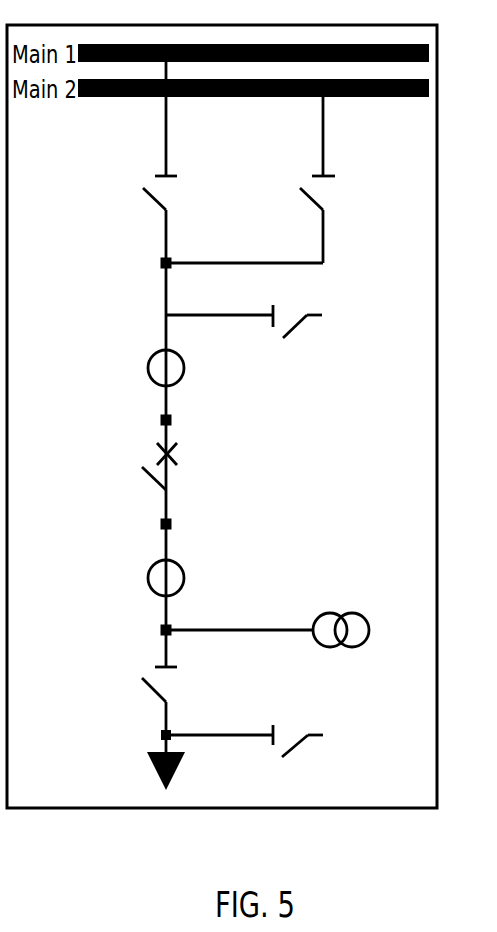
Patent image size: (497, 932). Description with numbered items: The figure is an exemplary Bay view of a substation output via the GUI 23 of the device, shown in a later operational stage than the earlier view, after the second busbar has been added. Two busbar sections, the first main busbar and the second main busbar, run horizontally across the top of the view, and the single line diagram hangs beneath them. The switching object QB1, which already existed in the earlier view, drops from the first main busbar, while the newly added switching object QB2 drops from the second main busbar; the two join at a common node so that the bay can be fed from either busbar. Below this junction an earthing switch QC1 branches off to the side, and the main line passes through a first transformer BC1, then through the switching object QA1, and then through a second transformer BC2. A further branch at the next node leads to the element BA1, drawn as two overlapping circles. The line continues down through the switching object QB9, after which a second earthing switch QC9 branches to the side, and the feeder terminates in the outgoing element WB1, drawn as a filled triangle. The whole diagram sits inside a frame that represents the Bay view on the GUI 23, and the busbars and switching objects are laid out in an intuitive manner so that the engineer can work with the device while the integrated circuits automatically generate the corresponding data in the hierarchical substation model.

The GUI 23 is at (222, 450).
The switching object QB1 is at (119, 193).
The switching object QB2 is at (282, 195).
The earthing switch 1 QC1 is at (291, 336).
The transformer BC1 is at (137, 368).
The switching object QA1 is at (131, 466).
The transformer BC2 is at (137, 578).
The voltage transformer BA1 is at (341, 647).
The switching object QB9 is at (132, 684).
The earthing switch 9 QC9 is at (294, 756).
The outgoing feeder / cable WB1 is at (136, 771).